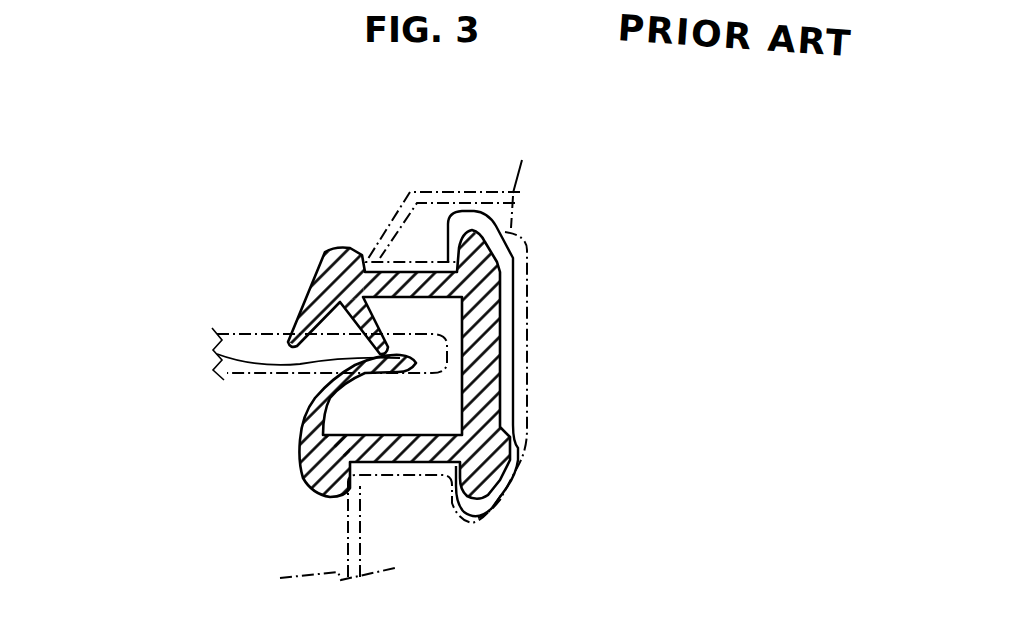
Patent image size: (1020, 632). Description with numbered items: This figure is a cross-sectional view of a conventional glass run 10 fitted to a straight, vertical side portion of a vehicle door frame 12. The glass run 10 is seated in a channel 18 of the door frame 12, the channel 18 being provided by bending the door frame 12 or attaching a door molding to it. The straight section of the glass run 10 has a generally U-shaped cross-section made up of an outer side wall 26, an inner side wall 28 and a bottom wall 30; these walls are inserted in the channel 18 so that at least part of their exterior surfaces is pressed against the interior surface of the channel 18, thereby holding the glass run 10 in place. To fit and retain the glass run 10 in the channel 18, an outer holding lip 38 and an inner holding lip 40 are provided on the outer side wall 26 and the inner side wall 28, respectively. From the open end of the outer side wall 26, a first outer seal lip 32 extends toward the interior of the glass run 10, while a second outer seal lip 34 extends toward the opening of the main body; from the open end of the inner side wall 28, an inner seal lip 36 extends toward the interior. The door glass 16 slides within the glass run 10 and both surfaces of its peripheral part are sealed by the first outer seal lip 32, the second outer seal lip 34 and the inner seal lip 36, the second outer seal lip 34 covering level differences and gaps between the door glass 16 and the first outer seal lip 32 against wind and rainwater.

The glass run 10 is at (399, 350).
The door frame 12 is at (402, 211).
The door glass 16 is at (297, 390).
The channel 18 is at (545, 363).
The outer side wall 26 is at (560, 375).
The inner side wall 28 is at (391, 519).
The bottom wall 30 is at (552, 353).
The first outer seal lip 32 is at (255, 340).
The second outer seal lip 34 is at (266, 297).
The inner seal lip 36 is at (285, 427).
The outer holding lip 38 is at (550, 245).
The inner holding lip 40 is at (550, 464).